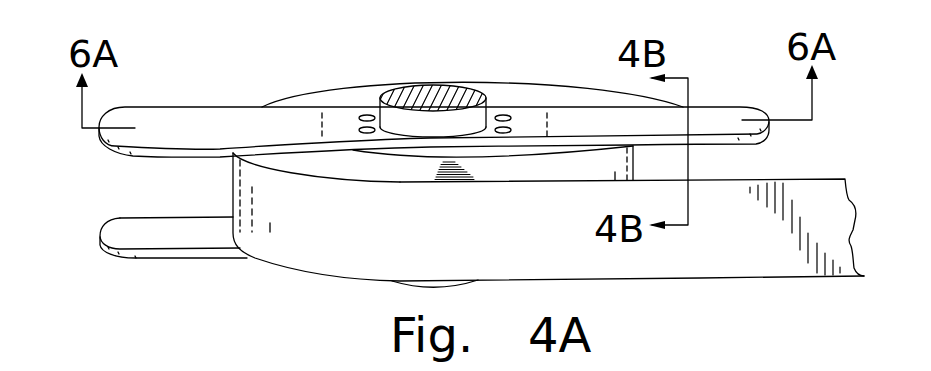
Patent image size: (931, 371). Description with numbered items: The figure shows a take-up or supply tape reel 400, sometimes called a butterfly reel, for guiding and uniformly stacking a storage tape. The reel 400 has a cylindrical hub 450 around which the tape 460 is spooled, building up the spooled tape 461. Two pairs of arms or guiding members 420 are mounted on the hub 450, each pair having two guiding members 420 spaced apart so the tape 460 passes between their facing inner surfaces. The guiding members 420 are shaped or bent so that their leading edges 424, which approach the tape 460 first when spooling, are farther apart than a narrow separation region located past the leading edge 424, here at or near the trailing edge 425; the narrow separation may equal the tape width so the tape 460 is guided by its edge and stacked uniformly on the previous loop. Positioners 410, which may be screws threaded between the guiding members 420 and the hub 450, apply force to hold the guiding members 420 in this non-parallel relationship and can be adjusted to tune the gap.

The tape reel 400 is at (637, 292).
The positioners 410 is at (367, 112).
The guiding members 420 is at (208, 120).
The leading edge 424 is at (192, 104).
The trailing edge 425 is at (162, 157).
The hub 450 is at (440, 92).
The tape 460 is at (772, 263).
The spooled tape 461 is at (355, 93).